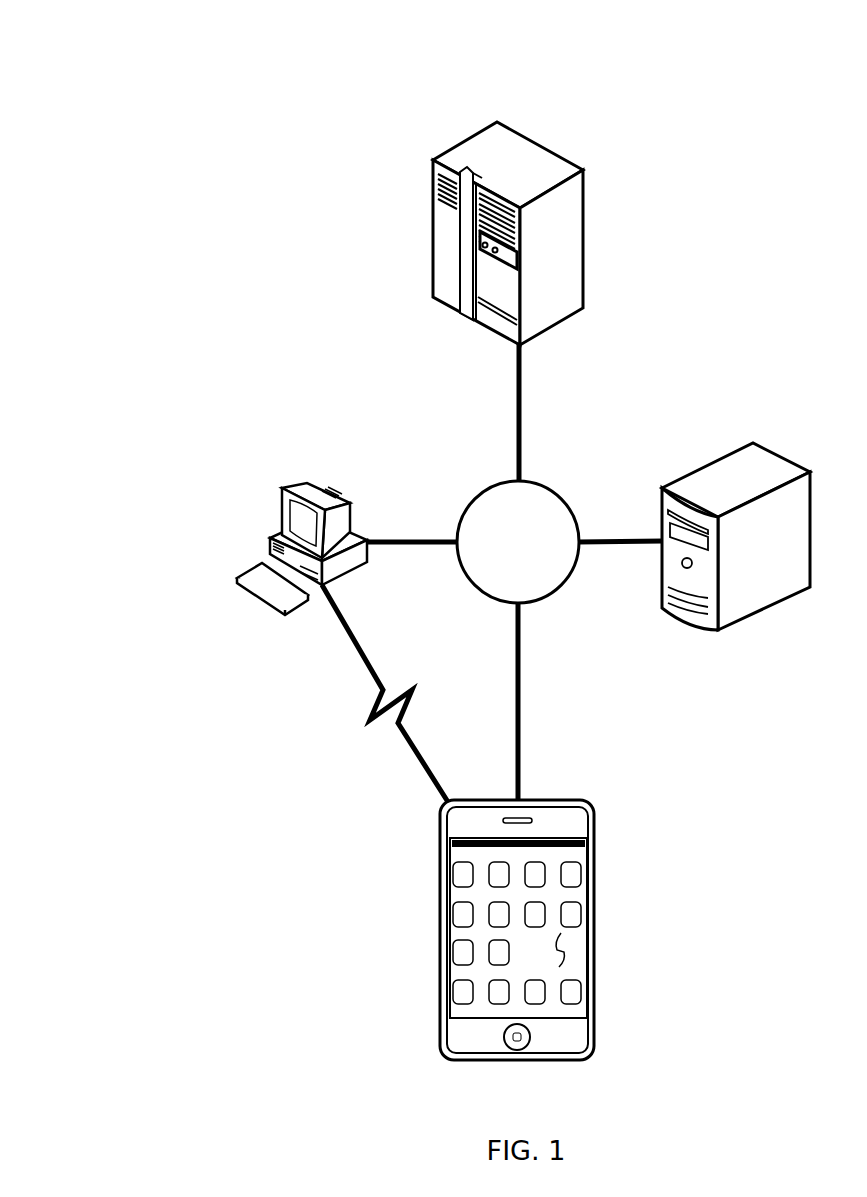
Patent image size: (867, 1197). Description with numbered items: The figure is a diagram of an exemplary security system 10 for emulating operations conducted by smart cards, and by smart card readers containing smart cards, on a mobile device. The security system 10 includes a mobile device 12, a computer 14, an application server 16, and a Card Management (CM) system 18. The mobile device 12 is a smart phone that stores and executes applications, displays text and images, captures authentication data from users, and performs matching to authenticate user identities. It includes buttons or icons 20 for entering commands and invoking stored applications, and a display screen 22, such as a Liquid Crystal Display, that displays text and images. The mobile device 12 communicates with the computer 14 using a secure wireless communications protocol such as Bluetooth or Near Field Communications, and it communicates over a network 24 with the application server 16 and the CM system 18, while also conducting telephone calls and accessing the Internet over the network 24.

The security system 10 is at (152, 97).
The mobile device 12 is at (441, 872).
The computer 14 is at (295, 485).
The application server 16 is at (753, 443).
The Card Management (CM) system 18 is at (497, 122).
The buttons or icons 20 is at (572, 873).
The display screen 22 is at (565, 952).
The network 24 is at (480, 493).